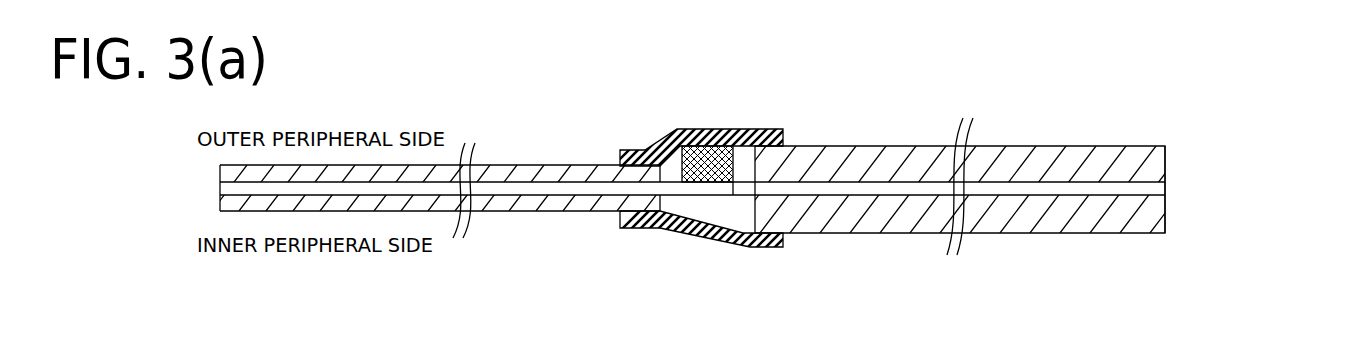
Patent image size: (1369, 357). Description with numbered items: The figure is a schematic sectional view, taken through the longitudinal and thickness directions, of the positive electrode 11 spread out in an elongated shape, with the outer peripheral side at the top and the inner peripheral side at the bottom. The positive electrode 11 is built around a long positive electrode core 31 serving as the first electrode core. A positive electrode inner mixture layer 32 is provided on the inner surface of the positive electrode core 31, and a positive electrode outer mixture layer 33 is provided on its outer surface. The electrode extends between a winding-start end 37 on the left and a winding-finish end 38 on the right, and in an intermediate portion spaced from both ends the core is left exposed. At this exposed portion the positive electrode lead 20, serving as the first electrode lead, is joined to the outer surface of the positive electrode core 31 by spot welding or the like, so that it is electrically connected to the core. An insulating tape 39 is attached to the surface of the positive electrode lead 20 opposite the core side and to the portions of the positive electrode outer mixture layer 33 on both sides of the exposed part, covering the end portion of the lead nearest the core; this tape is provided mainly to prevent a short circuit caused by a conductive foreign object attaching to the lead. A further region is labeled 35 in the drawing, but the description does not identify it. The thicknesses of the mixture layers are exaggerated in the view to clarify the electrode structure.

The positive electrode 11 is at (917, 112).
The positive electrode lead 20 is at (708, 183).
The positive electrode core 31 is at (519, 187).
The positive electrode inner mixture layer 32 is at (541, 207).
The positive electrode outer mixture layer 33 is at (583, 176).
The gap 35 is at (735, 185).
The winding-start end 37 is at (220, 183).
The winding-finish end 38 is at (1165, 186).
The insulating tape 39 is at (700, 146).